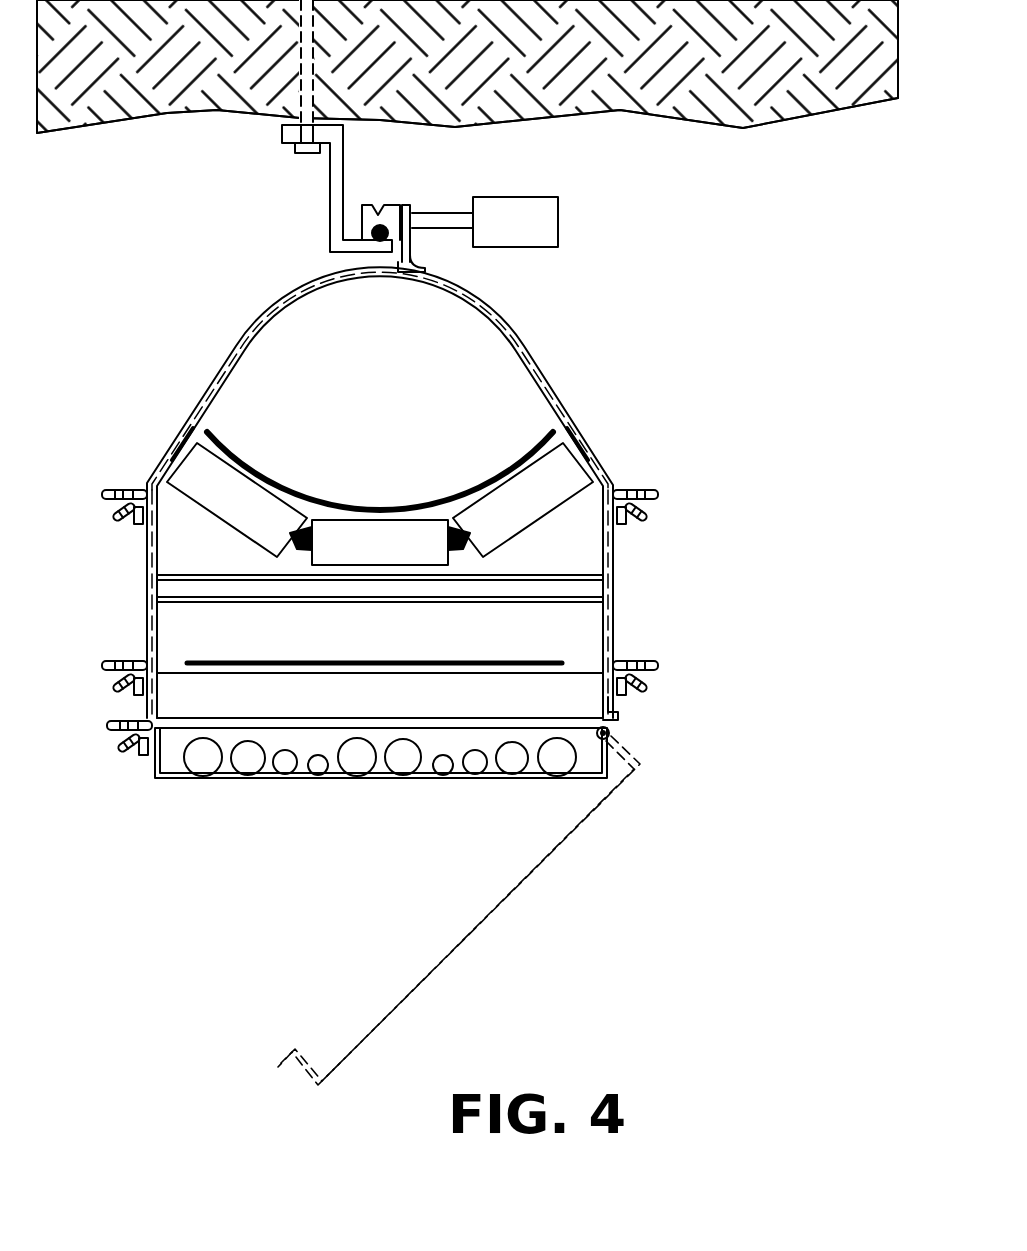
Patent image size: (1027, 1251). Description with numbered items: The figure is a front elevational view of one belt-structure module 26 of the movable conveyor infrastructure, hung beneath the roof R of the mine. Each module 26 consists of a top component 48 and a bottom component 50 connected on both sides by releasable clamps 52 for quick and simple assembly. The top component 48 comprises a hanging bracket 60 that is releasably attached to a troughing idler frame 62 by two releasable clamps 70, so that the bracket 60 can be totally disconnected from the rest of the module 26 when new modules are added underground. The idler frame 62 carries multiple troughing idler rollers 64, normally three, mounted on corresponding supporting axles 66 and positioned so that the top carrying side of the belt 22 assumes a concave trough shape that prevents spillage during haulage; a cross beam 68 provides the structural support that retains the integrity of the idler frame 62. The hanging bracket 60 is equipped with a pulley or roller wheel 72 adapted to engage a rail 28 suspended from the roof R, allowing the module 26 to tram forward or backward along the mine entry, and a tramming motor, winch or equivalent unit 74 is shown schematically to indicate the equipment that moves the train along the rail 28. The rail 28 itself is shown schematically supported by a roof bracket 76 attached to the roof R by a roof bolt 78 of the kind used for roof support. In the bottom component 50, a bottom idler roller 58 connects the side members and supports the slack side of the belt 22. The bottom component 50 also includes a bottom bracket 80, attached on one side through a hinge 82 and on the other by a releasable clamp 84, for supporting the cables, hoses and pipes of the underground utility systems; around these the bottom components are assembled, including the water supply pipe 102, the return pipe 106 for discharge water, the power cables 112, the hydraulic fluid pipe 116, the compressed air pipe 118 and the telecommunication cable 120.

The roof R is at (788, 92).
The roof bolt 78 is at (303, 147).
The roof bracket 76 is at (338, 203).
The pulley or roller wheel 72 is at (368, 222).
The rail 28 is at (370, 237).
The tramming motor, winch or equivalent unit 74 is at (548, 227).
The belt-structure module 26 is at (742, 355).
The hanging bracket 60 is at (533, 362).
The troughing idler frame 62 is at (612, 563).
The troughing idler rollers 64 is at (233, 497).
The belt 22 is at (318, 503).
The supporting axles 66 is at (468, 543).
The releasable clamps 70 is at (102, 490).
The top component 48 is at (135, 602).
The cross beam 68 is at (455, 600).
The bottom idler roller 58 is at (380, 695).
The releasable clamps 52 is at (108, 662).
The bottom component 50 is at (615, 708).
The releasable clamp 84 is at (112, 724).
The hinge 82 is at (609, 733).
The bottom bracket 80 is at (220, 780).
The water supply pipe 102 is at (202, 757).
The return pipe 106 is at (248, 763).
The power cables 112 is at (285, 763).
The cable 120 is at (443, 767).
The pipe 116 is at (478, 763).
The pipe 118 is at (555, 763).